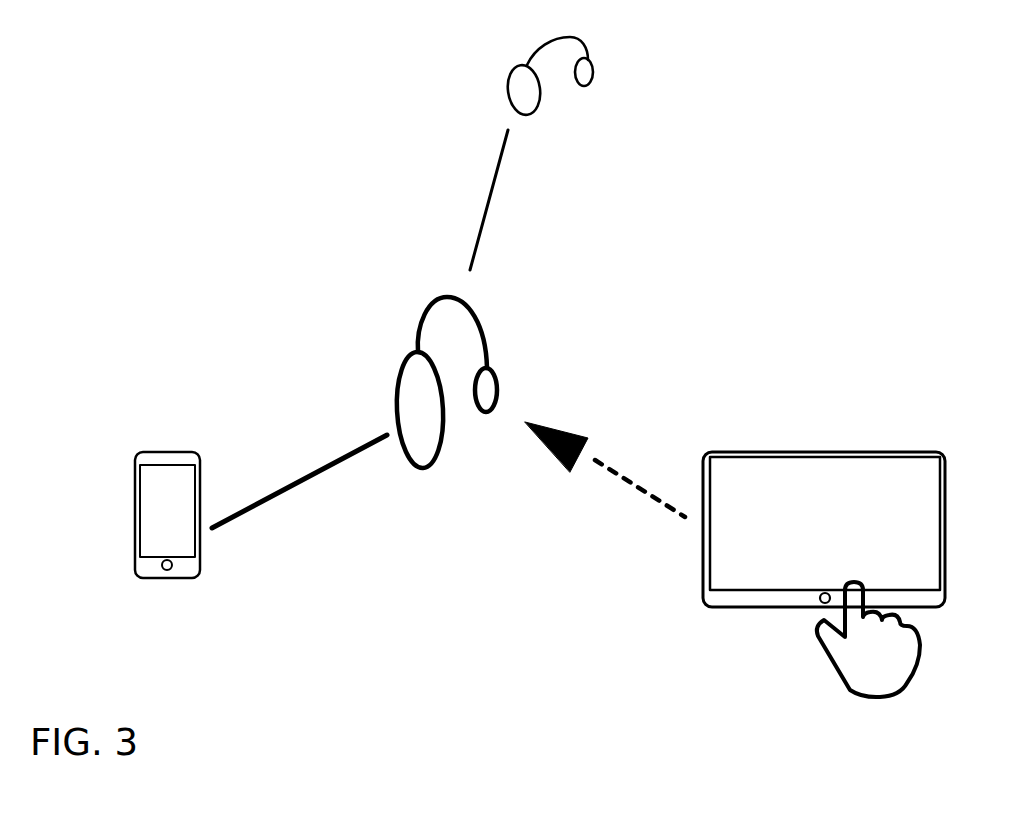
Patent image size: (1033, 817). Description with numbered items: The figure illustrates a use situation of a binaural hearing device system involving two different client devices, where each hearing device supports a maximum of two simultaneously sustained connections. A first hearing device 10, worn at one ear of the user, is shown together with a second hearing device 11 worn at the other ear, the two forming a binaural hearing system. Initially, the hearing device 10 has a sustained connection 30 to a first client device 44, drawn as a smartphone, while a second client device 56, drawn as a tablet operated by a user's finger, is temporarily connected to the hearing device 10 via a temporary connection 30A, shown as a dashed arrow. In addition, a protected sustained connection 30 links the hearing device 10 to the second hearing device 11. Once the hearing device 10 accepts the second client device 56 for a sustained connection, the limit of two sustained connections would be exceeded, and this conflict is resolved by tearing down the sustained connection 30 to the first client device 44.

The first hearing device 10 is at (415, 395).
The second hearing device 11 is at (530, 93).
The sustained connection 30 is at (485, 192).
The temporary connection 30A is at (635, 475).
The first client device 44 is at (148, 503).
The second client device 56 is at (758, 557).